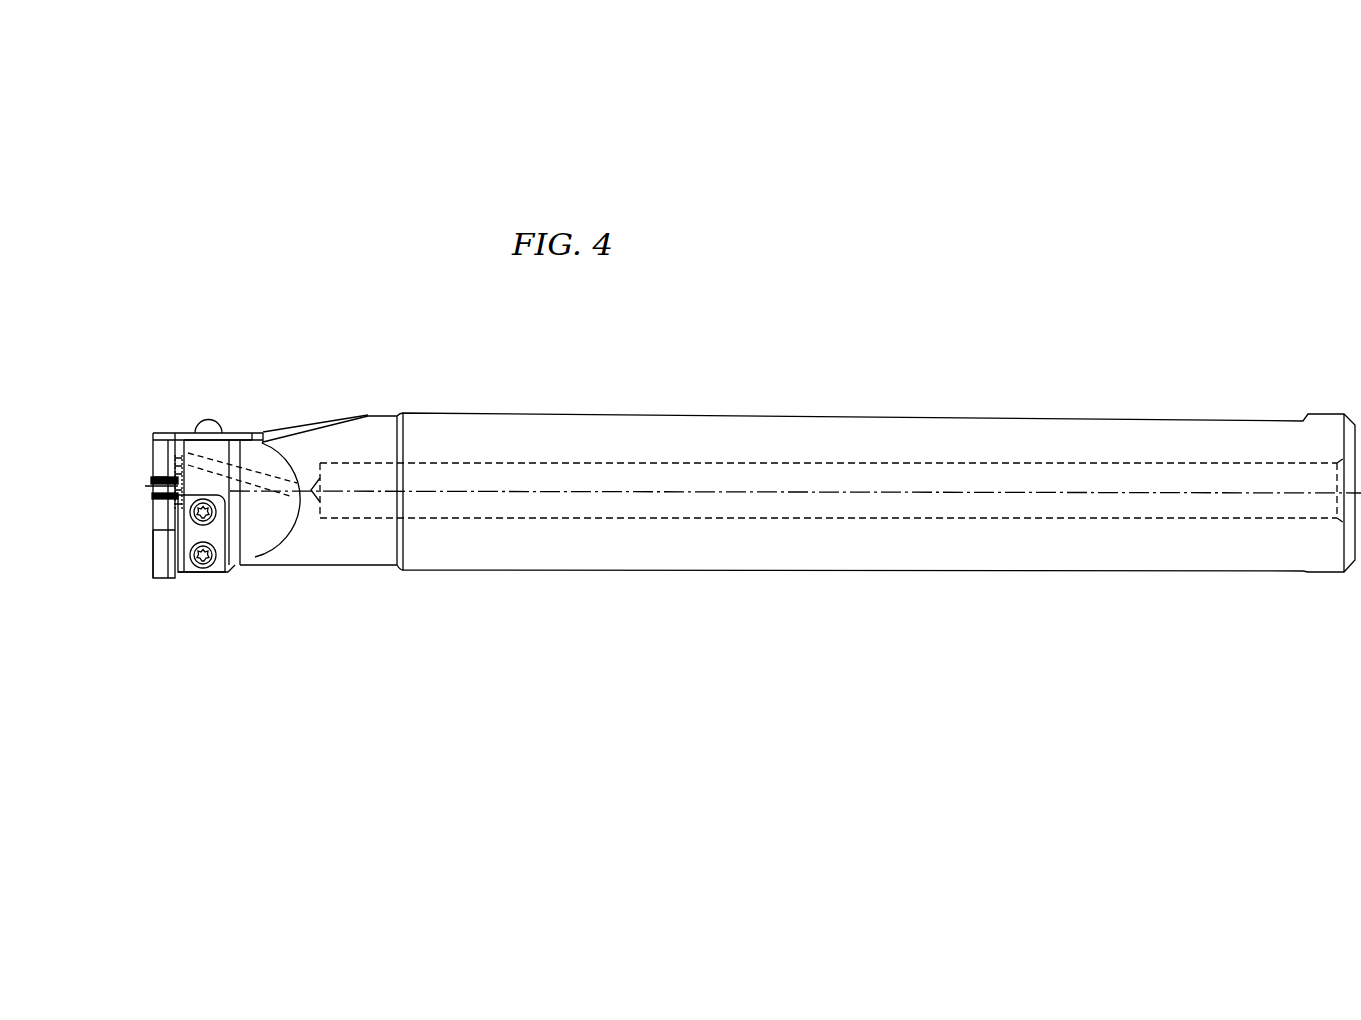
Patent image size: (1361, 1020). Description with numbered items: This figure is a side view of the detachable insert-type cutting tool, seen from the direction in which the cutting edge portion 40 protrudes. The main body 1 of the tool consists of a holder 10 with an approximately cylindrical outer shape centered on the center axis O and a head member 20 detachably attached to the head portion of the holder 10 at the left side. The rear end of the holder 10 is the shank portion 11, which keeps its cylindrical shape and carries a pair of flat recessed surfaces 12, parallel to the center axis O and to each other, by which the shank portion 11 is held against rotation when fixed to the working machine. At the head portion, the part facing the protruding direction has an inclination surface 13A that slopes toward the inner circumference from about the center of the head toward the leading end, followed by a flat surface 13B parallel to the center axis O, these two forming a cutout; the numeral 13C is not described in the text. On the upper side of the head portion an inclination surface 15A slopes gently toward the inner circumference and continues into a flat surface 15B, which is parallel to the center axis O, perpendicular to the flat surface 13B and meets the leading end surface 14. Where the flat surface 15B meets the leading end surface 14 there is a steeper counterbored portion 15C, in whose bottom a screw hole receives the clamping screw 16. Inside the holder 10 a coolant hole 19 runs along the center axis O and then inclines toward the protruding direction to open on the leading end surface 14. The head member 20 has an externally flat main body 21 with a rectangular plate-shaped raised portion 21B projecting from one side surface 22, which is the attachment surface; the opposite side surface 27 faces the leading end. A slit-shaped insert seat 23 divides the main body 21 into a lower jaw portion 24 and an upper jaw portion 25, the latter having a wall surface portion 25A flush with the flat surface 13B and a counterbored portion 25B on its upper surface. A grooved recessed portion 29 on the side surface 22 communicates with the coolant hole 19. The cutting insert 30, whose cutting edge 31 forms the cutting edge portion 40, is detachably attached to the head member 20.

The main body 1 is at (712, 328).
The holder 10 is at (808, 360).
The shank portion 11 is at (863, 435).
The recessed surfaces 12 is at (947, 420).
The inclination surface 13A is at (295, 522).
The flat surface 13B is at (246, 548).
The insert mounting seat 13C is at (213, 500).
The leading end surface 14 is at (158, 408).
The inclination surface 15A is at (318, 430).
The flat surface 15B is at (263, 435).
The counterbored portion 15C is at (231, 418).
The clamping screw 16 is at (199, 424).
The coolant hole 19 is at (707, 503).
The head member 20 is at (136, 562).
The main body 21 is at (163, 582).
The raised portion 21B is at (211, 575).
The side surface 22 is at (210, 432).
The insert seat 23 is at (138, 514).
The lower jaw portion 24 is at (162, 557).
The upper jaw portion 25 is at (157, 463).
The wall surface portion 25A is at (153, 433).
The counterbored portion 25B is at (162, 433).
The side surface 27 is at (153, 538).
The grooved recessed portion 29 is at (160, 452).
The cutting insert 30 is at (137, 500).
The cutting edge 31 is at (134, 477).
The cutting edge portion 40 is at (137, 475).
The center axis O is at (773, 493).